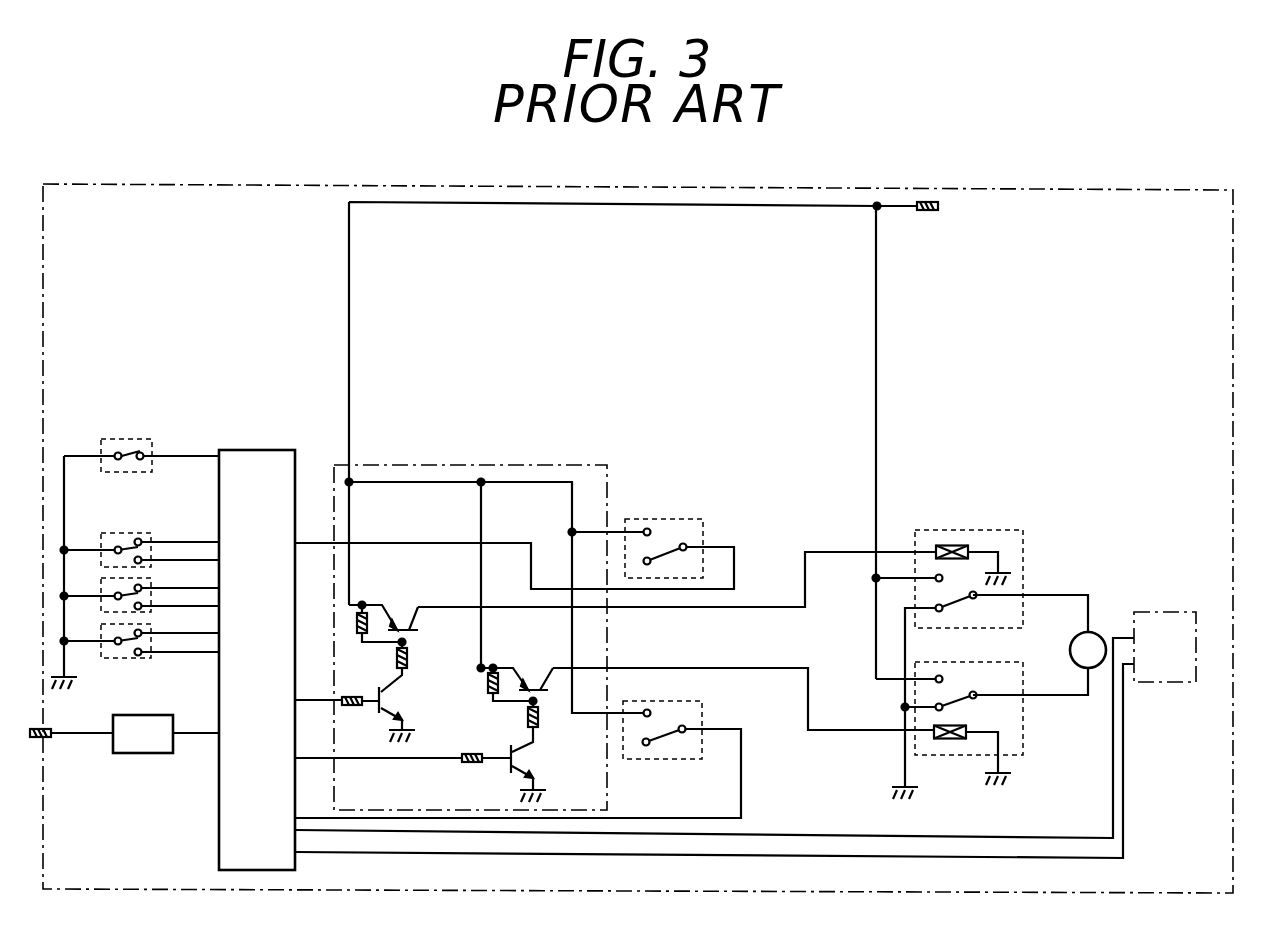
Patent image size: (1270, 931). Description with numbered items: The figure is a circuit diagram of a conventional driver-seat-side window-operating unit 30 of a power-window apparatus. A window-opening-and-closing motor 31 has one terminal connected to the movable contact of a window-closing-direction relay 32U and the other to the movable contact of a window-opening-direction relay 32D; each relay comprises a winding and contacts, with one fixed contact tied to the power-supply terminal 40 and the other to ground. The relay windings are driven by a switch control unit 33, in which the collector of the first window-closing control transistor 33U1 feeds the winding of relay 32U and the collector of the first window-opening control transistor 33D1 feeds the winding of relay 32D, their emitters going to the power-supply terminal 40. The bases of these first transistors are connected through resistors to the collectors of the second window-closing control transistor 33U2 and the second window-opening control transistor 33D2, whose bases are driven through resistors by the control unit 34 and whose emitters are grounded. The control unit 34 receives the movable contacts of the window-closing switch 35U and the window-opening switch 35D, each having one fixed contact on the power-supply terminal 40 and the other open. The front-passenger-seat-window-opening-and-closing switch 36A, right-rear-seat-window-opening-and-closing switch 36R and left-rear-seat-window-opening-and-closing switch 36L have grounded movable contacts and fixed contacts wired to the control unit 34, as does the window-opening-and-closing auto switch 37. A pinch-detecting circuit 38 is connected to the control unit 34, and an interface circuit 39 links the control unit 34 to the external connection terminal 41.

The window-operating unit 30 is at (538, 185).
The window-opening-and-closing motor 31 is at (1078, 637).
The window-closing-direction relay 32U is at (985, 530).
The window-opening-direction relay 32D is at (950, 755).
The switch control unit 33 is at (565, 465).
The first window-closing control transistor 33U1 is at (400, 613).
The second window-closing control transistor 33U2 is at (397, 702).
The first window-opening control transistor 33D1 is at (532, 672).
The second window-opening control transistor 33D2 is at (533, 762).
The control unit (CPU) 34 is at (264, 450).
The window-closing switch 35U is at (677, 519).
The window-opening switch 35D is at (680, 701).
The front-passenger-seat-window-opening-and-closing switch 36A is at (144, 533).
The right-rear-seat-window-opening-and-closing switch 36R is at (144, 578).
The left-rear-seat-window-opening-and-closing switch 36L is at (144, 624).
The window-opening-and-closing auto switch 37 is at (136, 439).
The pinch-detecting circuit 38 is at (1150, 612).
The interface circuit (I/F) 39 is at (157, 715).
The power-supply terminal 40 is at (930, 212).
The external connection terminal 41 is at (48, 740).